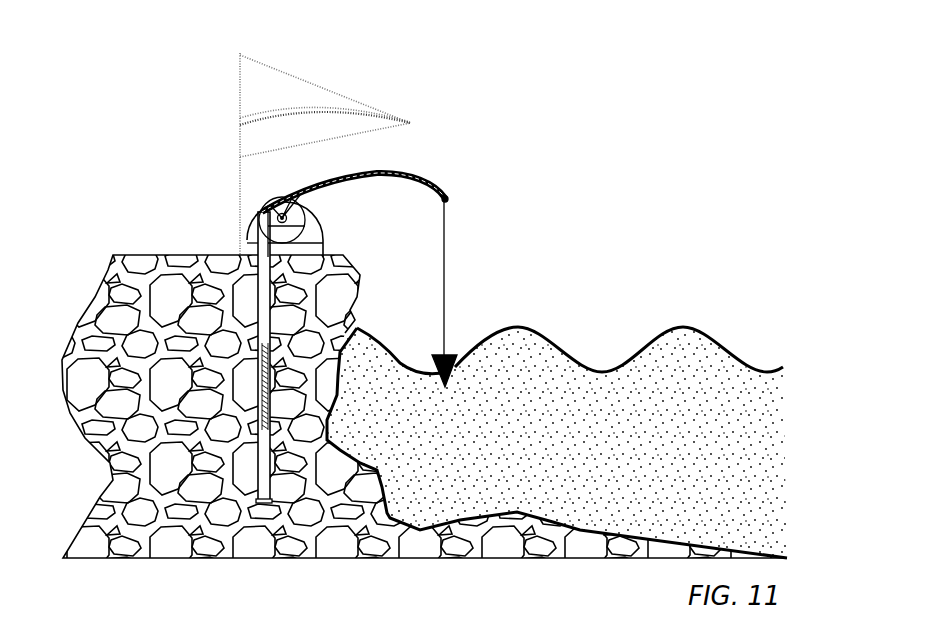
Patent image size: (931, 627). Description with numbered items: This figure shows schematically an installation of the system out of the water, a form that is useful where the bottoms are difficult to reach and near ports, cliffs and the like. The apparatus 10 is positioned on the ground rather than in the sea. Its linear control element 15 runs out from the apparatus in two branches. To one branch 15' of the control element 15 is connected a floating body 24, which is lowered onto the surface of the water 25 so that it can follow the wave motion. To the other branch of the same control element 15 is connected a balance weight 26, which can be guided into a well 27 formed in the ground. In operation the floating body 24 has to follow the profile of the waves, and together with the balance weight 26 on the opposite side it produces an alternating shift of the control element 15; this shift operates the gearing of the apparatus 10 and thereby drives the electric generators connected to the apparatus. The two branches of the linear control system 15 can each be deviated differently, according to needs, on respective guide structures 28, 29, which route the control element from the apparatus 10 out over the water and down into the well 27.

The tethering apparatus head 10 is at (309, 189).
The linear control element 15 is at (473, 287).
The branch of the linear control element 15' is at (485, 272).
The floating body 24 is at (437, 357).
The surface of the water 25 is at (552, 342).
The balance weight 26 is at (250, 370).
The well 27 is at (263, 488).
The guide structure 28 is at (377, 181).
The guide structure 29 is at (278, 218).